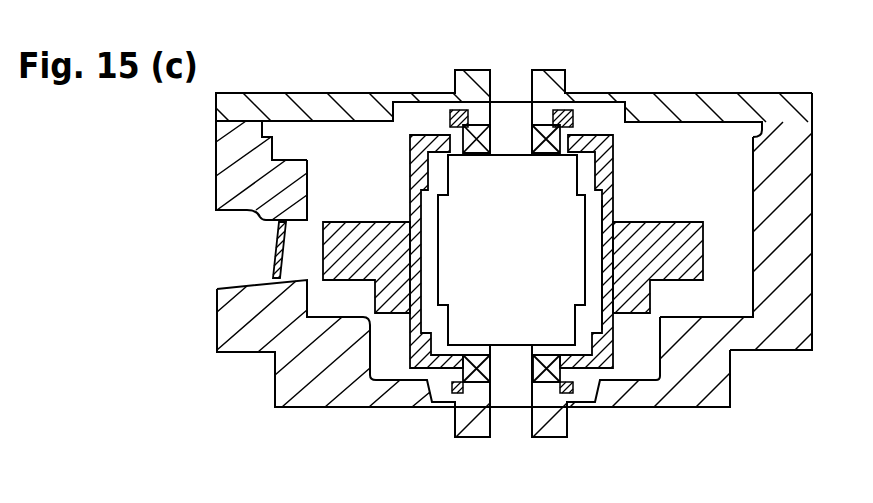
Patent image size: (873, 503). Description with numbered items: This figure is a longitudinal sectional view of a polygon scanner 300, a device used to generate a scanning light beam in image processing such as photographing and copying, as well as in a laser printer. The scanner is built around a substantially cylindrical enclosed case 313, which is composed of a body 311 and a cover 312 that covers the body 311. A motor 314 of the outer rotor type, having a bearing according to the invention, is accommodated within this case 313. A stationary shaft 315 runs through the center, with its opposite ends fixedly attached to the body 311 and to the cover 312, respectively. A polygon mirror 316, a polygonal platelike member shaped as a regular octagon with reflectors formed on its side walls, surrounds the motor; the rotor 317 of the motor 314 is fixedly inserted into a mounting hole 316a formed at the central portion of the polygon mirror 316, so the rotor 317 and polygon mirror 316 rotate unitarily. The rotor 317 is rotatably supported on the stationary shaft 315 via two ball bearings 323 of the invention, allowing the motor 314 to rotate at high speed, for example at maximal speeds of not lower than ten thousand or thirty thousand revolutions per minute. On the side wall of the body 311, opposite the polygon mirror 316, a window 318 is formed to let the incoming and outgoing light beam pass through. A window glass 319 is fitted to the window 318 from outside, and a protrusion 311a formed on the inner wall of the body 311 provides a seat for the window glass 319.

The polygon scanner 300 is at (453, 245).
The body 311 is at (657, 43).
The protrusion 311a is at (294, 158).
The cover 312 is at (712, 100).
The enclosed case 313 is at (516, 175).
The motor 314 is at (620, 345).
The stationary shaft 315 is at (510, 430).
The polygon mirror 316 is at (707, 260).
The mounting hole 316a is at (600, 228).
The rotor 317 is at (407, 160).
The window 318 is at (243, 213).
The window glass 319 is at (278, 252).
The ball bearings 323 is at (542, 125).